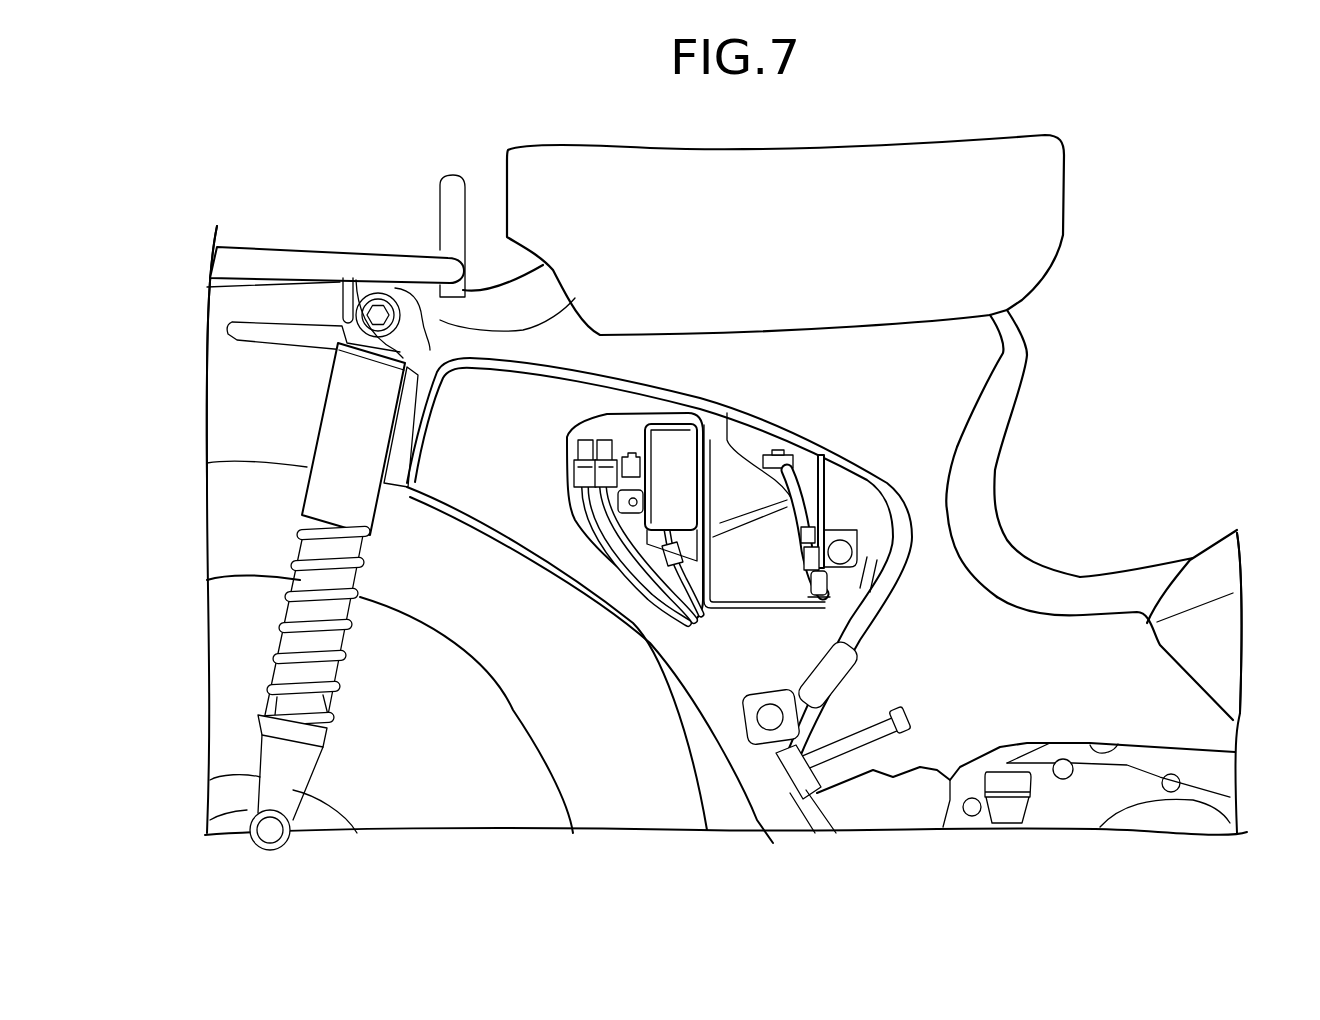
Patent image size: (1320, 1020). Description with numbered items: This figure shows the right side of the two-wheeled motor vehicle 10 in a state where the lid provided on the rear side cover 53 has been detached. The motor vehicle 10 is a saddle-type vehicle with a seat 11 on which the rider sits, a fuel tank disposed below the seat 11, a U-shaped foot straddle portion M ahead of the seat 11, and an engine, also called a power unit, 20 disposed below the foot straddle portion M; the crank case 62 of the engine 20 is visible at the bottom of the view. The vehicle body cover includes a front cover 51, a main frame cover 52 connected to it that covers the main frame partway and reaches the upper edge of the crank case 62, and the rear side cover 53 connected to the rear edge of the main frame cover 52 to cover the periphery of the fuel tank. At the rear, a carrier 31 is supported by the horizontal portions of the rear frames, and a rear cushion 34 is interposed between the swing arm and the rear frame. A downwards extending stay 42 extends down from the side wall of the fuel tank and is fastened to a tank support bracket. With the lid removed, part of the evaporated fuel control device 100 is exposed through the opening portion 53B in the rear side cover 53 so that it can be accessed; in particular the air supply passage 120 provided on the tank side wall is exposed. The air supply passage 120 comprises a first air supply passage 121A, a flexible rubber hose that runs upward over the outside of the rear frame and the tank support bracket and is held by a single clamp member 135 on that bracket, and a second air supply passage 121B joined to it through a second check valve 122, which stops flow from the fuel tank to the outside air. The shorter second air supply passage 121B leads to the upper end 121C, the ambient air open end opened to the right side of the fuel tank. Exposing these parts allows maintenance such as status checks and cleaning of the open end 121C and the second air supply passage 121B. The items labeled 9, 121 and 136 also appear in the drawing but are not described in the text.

The rear fender 9 is at (220, 537).
The two-wheeled motor vehicle 10 is at (1201, 199).
The seat 11 is at (983, 140).
The engine 20 is at (1086, 807).
The carrier 31 is at (245, 255).
The rear cushion 34 is at (337, 427).
The downwards extending stay 42 is at (860, 528).
The front cover 51 is at (1180, 548).
The main frame cover 52 is at (1222, 537).
The rear side cover 53 is at (990, 343).
The opening portion 53B is at (727, 437).
The crank case 62 is at (1072, 800).
The evaporated fuel control device 100 is at (866, 469).
The air supply passage 120 is at (822, 466).
The harness 121 is at (805, 532).
The first air supply passage 121A is at (826, 572).
The second air supply passage 121B is at (815, 527).
The ambient air open end 121C is at (775, 450).
The second check valve 122 is at (819, 550).
The clamp member 135 is at (828, 584).
The insertion direction 136 is at (812, 481).
The foot straddle portion M is at (1050, 573).